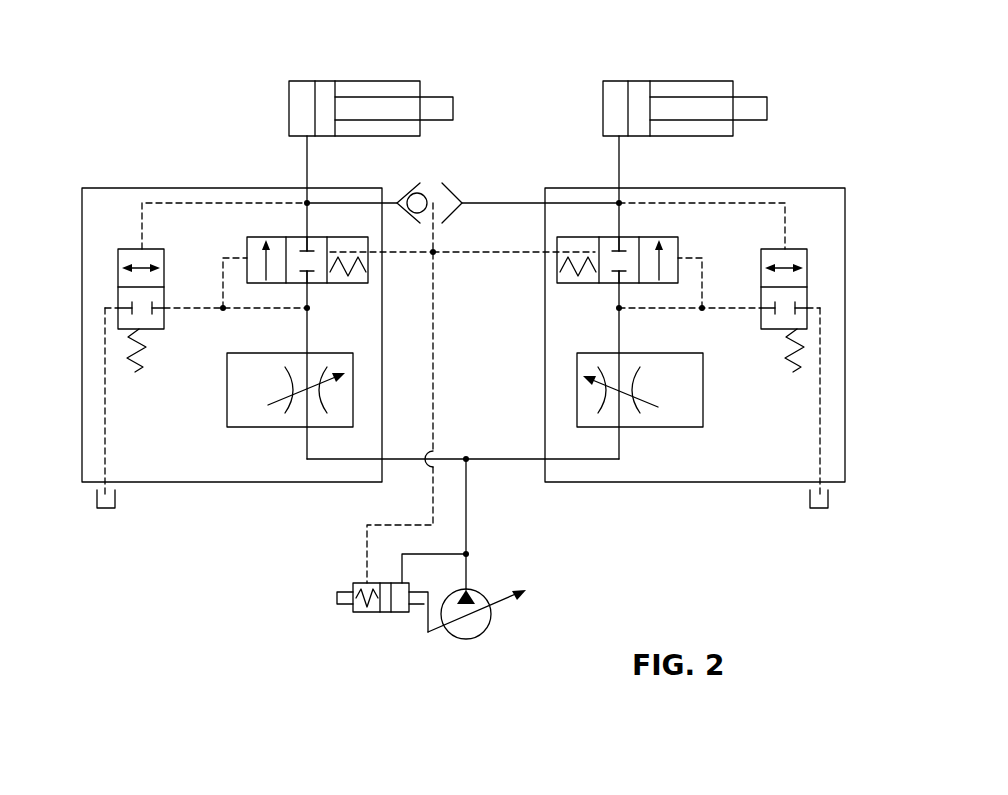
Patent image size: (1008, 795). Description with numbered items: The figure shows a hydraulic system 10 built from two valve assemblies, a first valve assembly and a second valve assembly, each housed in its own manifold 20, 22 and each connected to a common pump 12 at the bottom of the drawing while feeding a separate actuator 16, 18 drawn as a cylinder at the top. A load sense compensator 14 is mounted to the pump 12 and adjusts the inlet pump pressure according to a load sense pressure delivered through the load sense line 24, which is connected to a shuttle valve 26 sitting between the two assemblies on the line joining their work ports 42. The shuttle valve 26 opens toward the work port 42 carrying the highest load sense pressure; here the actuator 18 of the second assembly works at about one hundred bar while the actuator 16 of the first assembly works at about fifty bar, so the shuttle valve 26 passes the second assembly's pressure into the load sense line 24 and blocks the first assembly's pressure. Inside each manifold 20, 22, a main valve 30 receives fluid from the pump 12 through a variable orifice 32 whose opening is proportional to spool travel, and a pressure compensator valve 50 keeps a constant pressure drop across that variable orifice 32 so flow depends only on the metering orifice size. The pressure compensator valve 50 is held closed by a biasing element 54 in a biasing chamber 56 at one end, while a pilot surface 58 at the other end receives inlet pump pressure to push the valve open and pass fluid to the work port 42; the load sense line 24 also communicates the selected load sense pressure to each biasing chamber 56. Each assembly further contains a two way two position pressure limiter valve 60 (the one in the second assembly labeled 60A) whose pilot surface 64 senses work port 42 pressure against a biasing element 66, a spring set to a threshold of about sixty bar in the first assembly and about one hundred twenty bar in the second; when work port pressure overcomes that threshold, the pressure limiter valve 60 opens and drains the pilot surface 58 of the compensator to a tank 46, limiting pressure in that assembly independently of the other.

The hydraulic system 10 is at (784, 27).
The pump 12 is at (492, 620).
The load sense compensator 14 is at (365, 612).
The actuator 16 is at (348, 80).
The actuator 18 is at (660, 80).
The manifold 20 is at (137, 188).
The manifold 22 is at (827, 188).
The load sense line 24 is at (436, 360).
The shuttle valve 26 is at (434, 200).
The main valve 30 is at (227, 400).
The variable orifice 32 is at (300, 413).
The work port 42 is at (312, 201).
The tank 46 is at (97, 500).
The pressure compensator valve 50 is at (297, 237).
The biasing element 54 is at (343, 276).
The biasing chamber 56 is at (368, 259).
The pilot surface 58 is at (246, 252).
The pressure limiter valve 60 is at (118, 297).
The pressure reducing valve R2 60A is at (807, 276).
The pilot surface 64 is at (127, 249).
The biasing element 66 is at (127, 343).